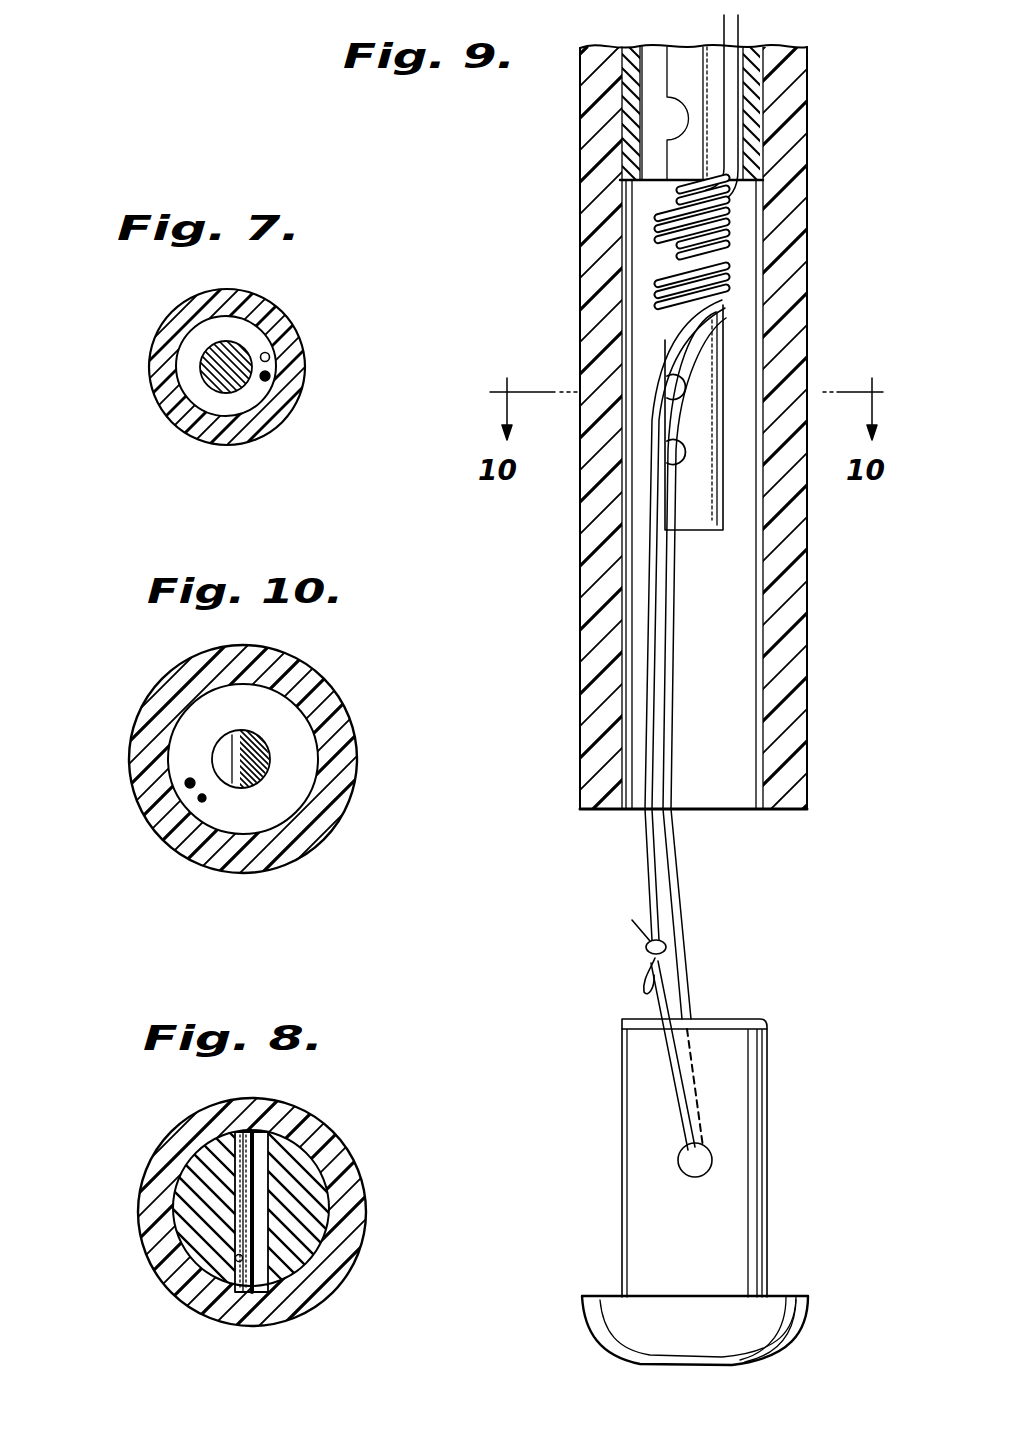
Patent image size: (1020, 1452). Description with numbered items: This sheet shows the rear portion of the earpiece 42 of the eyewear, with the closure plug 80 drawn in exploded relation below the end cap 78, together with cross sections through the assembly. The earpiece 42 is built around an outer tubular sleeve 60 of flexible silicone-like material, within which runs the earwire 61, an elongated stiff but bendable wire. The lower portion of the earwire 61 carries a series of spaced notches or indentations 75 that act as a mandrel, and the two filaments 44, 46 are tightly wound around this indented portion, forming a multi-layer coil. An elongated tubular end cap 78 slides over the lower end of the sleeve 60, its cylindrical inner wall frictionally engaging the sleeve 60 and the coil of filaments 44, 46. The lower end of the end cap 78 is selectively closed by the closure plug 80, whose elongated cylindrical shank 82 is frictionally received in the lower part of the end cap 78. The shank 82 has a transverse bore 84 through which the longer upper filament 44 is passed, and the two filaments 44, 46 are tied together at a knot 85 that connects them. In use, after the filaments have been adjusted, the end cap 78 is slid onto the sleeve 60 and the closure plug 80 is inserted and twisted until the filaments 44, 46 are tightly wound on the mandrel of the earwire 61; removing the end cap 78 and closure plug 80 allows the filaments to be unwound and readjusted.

In FIG. 9, the earpiece 42 is at (772, 102).
In FIG. 9, the upper filament 44 is at (682, 880).
In FIG. 7, the upper filament 44 is at (270, 357).
In FIG. 10, the upper filament 44 is at (185, 780).
In FIG. 8, the upper filament 44 is at (250, 1185).
In FIG. 9, the filament 46 is at (640, 850).
In FIG. 7, the filament 46 is at (272, 376).
In FIG. 10, the filament 46 is at (200, 802).
In FIG. 9, the sleeve 60 is at (756, 147).
In FIG. 7, the sleeve 60 is at (180, 327).
In FIG. 9, the earwire 61 is at (695, 512).
In FIG. 7, the earwire 61 is at (218, 373).
In FIG. 10, the earwire 61 is at (258, 755).
In FIG. 9, the indentations 75 is at (678, 438).
In FIG. 10, the indentations 75 is at (230, 782).
In FIG. 9, the end cap 78 is at (568, 193).
In FIG. 10, the end cap 78 is at (128, 692).
In FIG. 8, the end cap 78 is at (362, 1140).
In FIG. 9, the closure plug 80 is at (592, 1368).
In FIG. 9, the shank 82 is at (730, 1060).
In FIG. 8, the shank 82 is at (295, 1227).
In FIG. 9, the transverse bore 84 is at (705, 1165).
In FIG. 8, the transverse bore 84 is at (239, 1262).
In FIG. 9, the knot 85 is at (648, 948).